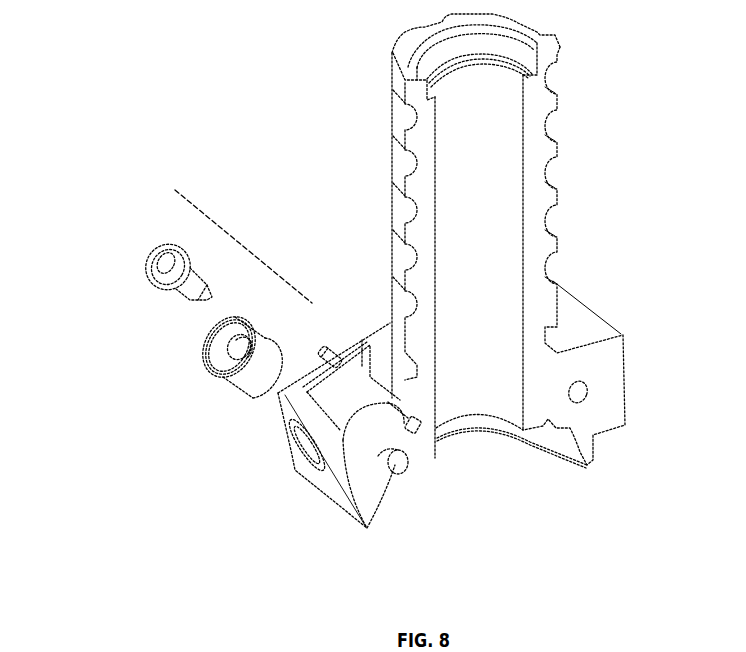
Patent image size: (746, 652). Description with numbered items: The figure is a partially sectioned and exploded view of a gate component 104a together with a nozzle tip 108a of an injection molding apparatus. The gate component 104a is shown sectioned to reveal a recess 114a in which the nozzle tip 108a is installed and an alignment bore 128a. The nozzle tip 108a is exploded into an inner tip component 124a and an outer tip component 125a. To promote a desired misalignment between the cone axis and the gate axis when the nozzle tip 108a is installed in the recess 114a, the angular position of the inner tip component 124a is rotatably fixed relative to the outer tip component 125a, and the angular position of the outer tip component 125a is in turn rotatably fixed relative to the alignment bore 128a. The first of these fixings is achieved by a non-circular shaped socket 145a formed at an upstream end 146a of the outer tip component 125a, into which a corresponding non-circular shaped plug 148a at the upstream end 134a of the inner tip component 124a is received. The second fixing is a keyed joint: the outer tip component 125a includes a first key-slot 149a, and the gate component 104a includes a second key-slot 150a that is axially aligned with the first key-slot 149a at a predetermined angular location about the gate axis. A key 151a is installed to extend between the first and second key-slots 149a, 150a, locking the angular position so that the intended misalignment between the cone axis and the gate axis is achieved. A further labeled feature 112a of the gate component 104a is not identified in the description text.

The gate component 104a is at (377, 501).
The nozzle tip 108a is at (243, 246).
The boss 112a is at (408, 463).
The recess 114a is at (368, 448).
The inner tip component 124a is at (202, 254).
The outer tip component 125a is at (265, 312).
The alignment bore 128a is at (385, 462).
The upstream end 134a is at (155, 265).
The non-circular shaped socket 145a is at (220, 343).
The upstream end 146a is at (212, 362).
The non-circular shaped plug 148a is at (178, 292).
The first key-slot 149a is at (244, 392).
The second key-slot 150a is at (413, 418).
The key 151a is at (331, 345).